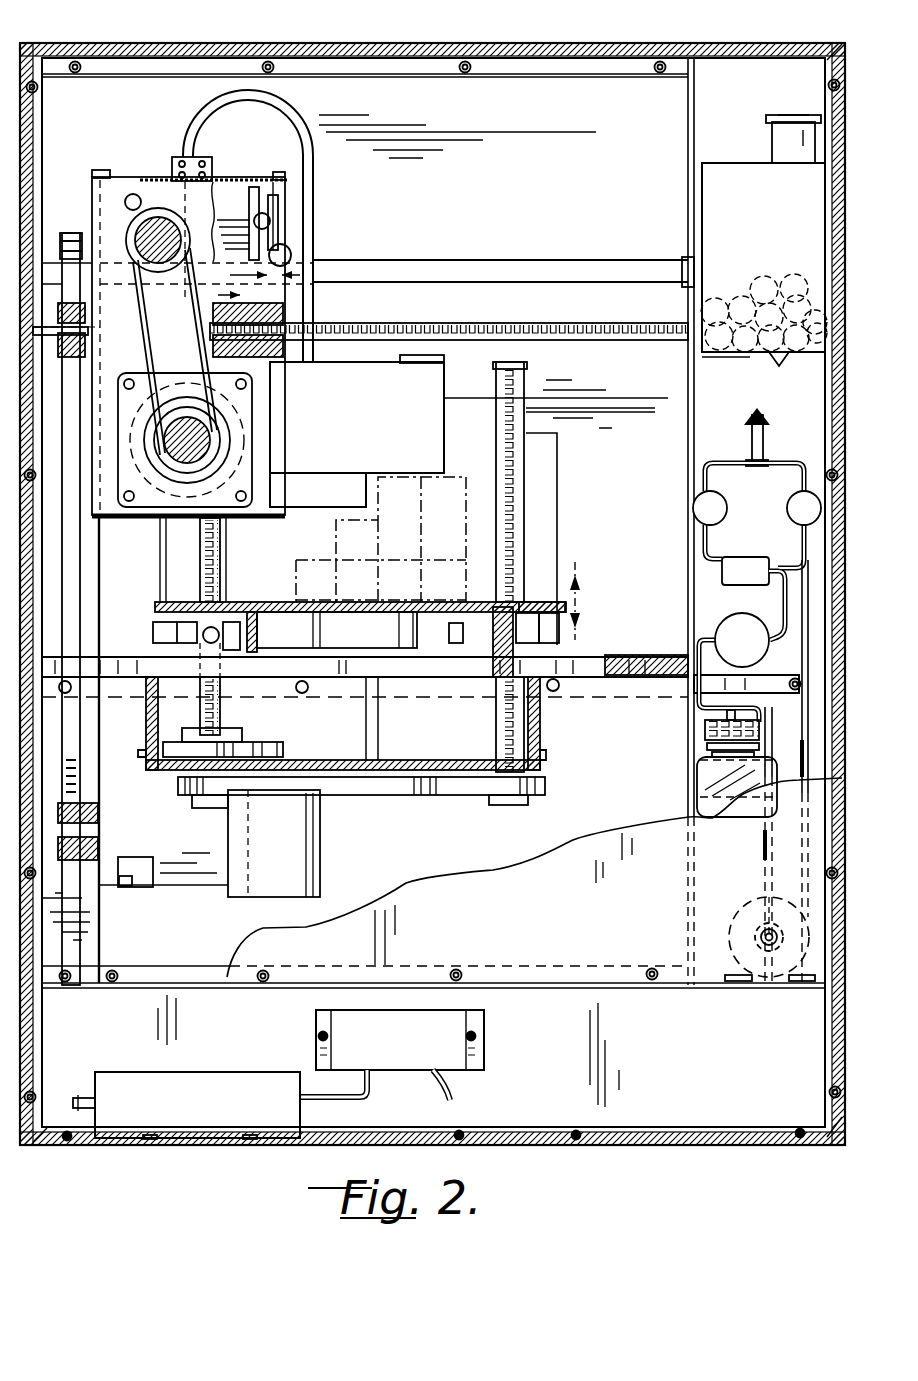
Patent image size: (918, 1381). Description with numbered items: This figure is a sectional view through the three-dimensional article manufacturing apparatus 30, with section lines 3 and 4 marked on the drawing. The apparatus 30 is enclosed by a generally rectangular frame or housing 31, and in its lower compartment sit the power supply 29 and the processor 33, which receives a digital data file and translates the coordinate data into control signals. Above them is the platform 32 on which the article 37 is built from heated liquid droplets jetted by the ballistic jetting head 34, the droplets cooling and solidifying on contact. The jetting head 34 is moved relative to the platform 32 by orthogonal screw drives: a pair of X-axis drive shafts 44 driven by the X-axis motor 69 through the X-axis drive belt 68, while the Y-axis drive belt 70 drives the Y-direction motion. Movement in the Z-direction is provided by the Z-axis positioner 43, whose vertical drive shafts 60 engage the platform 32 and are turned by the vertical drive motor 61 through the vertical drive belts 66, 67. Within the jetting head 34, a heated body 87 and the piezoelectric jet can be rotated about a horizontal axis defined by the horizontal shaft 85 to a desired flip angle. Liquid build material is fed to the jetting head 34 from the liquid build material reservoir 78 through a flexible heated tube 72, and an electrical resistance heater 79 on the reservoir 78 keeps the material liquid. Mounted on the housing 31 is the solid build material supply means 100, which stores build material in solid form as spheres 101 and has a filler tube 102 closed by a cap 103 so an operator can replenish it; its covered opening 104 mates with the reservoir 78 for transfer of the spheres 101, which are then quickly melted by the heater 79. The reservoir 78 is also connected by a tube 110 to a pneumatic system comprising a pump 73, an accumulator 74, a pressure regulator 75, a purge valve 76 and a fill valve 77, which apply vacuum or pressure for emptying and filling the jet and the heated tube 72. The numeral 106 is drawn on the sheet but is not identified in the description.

The section line 3- 3 is at (50, 100).
The section line 4- 4 is at (187, 698).
The power supply 29 is at (486, 1037).
The three-dimensional article manufacturing apparatus 30 is at (570, 40).
The frame or housing 31 is at (668, 43).
The platform 32 is at (546, 573).
The processor 33 is at (190, 1072).
The ballistic jetting head 34 is at (297, 297).
The article 37 is at (448, 478).
The Z-axis positioner 43 is at (472, 808).
The X-axis drive shafts 44 is at (435, 325).
The vertical drive shafts 60 is at (228, 712).
The vertical drive motor 61 is at (308, 815).
The vertical drive belt 66 is at (462, 793).
The vertical drive belt 67 is at (290, 742).
The X-axis drive belt 68 is at (72, 581).
The X-axis motor 69 is at (185, 880).
The Y-axis drive belt 70 is at (123, 290).
The flexible heated tube 72 is at (314, 204).
The pump 73 is at (728, 936).
The accumulator 74 is at (712, 772).
The pressure regulator 75 is at (738, 614).
The purge valve 76 is at (787, 524).
The fill valve 77 is at (727, 506).
The liquid build material reservoir 78 is at (446, 378).
The electrical resistance heater 79 is at (298, 510).
The horizontal shaft 85 is at (156, 212).
The heated body 87 is at (192, 405).
The solid build material supply means 100 is at (724, 163).
The spheres 101 is at (781, 357).
The filler tube 102 is at (771, 126).
The cap 103 is at (800, 113).
The covered opening 104 is at (730, 357).
The reservoir inlet 106 is at (433, 357).
The tube 110 is at (314, 313).